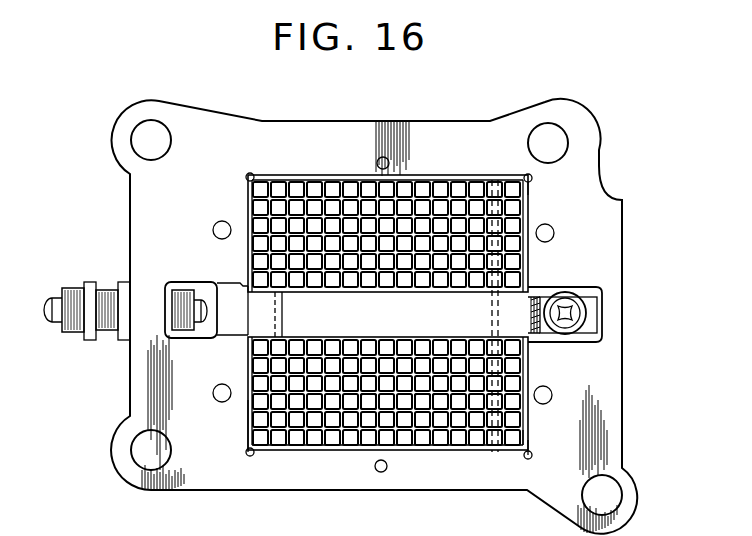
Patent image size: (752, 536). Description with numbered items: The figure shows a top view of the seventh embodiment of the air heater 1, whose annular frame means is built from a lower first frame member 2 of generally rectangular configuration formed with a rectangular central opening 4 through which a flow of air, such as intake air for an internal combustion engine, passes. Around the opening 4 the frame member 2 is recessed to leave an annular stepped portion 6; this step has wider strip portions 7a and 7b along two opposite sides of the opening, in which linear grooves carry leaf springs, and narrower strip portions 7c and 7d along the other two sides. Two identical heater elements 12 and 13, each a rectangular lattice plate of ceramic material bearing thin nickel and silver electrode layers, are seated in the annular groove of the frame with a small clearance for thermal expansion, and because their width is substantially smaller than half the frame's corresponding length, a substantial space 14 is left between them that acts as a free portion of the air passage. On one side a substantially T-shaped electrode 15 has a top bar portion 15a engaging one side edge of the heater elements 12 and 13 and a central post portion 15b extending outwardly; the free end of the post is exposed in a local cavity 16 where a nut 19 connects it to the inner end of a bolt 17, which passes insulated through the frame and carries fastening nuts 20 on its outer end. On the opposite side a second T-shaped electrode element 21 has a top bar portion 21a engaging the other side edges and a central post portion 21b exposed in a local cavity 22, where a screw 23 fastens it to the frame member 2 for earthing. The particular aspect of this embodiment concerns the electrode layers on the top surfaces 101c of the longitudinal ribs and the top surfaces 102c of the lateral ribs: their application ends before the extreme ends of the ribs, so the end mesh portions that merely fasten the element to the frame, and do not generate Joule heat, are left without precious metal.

The air heater 1 is at (466, 126).
The first frame member 2 is at (610, 438).
The central opening 4 is at (490, 186).
The annular stepped portion 6 is at (522, 198).
The wider strip portion 7a is at (260, 457).
The wider strip portion 7b is at (513, 457).
The narrower strip portion 7c is at (363, 178).
The narrower strip portion 7d is at (472, 457).
The heater element 12 is at (312, 428).
The heater element 13 is at (337, 190).
The space 14 is at (390, 318).
The electrode 15 is at (227, 298).
The top bar portion of electrode 15a is at (253, 417).
The central post portion of electrode 15b is at (227, 323).
The local cavity 16 is at (200, 337).
The bolt 17 is at (48, 318).
The nut 19 is at (182, 290).
The fastening nuts 20 is at (102, 336).
The electrode element 21 is at (543, 297).
The top bar portion of electrode element 21a is at (522, 442).
The central post portion of electrode element 21b is at (547, 335).
The local cavity 22 is at (593, 290).
The screw 23 is at (575, 333).
The top surface of longitudinal rib 101c is at (443, 408).
The top surface of lateral rib 102c is at (365, 402).